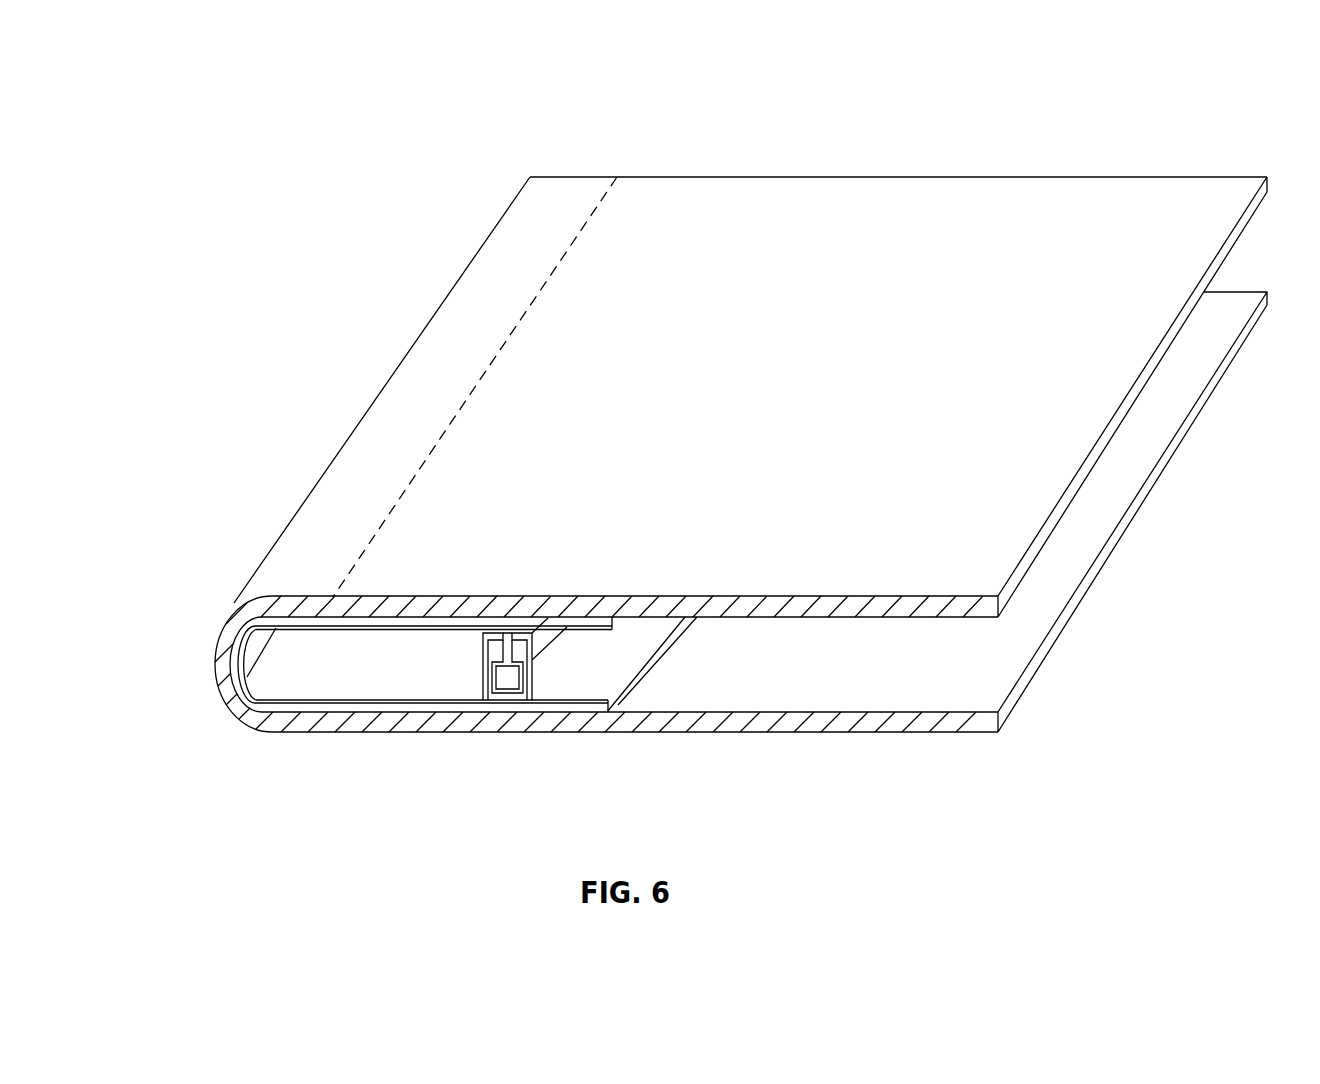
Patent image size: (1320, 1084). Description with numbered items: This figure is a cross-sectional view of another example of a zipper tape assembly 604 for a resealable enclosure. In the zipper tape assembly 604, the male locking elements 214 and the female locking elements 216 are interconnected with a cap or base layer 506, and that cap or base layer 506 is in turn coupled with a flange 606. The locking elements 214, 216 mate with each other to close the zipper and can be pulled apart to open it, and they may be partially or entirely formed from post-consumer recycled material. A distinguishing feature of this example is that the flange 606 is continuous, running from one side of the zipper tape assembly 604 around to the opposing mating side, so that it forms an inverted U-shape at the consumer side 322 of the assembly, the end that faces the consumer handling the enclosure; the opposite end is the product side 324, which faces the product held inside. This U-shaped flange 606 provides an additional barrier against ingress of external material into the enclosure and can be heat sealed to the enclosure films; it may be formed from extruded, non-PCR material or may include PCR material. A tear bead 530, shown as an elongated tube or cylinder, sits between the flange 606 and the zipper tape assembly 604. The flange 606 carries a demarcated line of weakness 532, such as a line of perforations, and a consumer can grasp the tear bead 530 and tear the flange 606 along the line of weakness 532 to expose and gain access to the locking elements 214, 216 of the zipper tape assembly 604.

The zipper tape assembly 604 is at (285, 128).
The flange 606 is at (988, 215).
The line of weakness 532 is at (487, 367).
The cap or base layer 506 is at (282, 705).
The tear bead 530 is at (255, 652).
The consumer side 322 is at (203, 670).
The product side 324 is at (1057, 663).
The female locking elements 216 is at (484, 680).
The male locking elements 214 is at (510, 672).